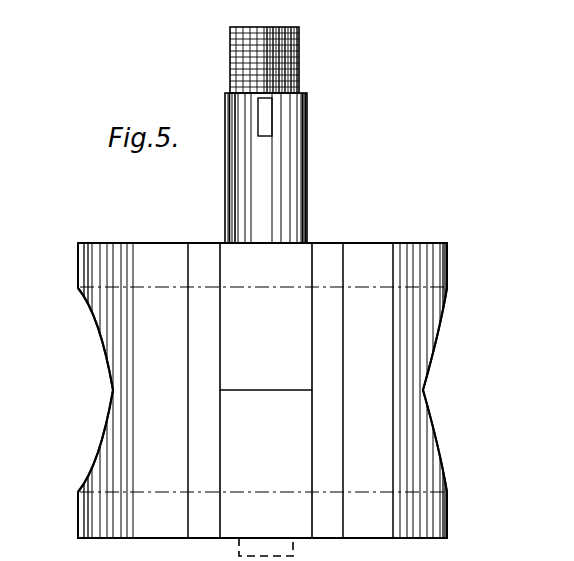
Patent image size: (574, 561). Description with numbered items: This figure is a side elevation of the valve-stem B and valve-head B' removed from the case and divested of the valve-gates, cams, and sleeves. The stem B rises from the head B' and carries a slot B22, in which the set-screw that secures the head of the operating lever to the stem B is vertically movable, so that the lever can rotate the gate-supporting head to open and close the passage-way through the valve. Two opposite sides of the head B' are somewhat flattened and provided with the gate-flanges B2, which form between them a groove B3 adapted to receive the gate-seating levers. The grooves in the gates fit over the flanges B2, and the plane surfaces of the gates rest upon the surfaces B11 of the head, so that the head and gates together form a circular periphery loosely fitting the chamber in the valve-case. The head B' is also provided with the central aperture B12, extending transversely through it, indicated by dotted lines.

The valve-stem B is at (290, 135).
The valve-head B' is at (262, 369).
The gate-flanges B2 is at (318, 455).
The groove B3 is at (266, 316).
The surfaces of the head B11 is at (264, 390).
The central aperture B12 is at (112, 398).
The slot B22 is at (262, 118).